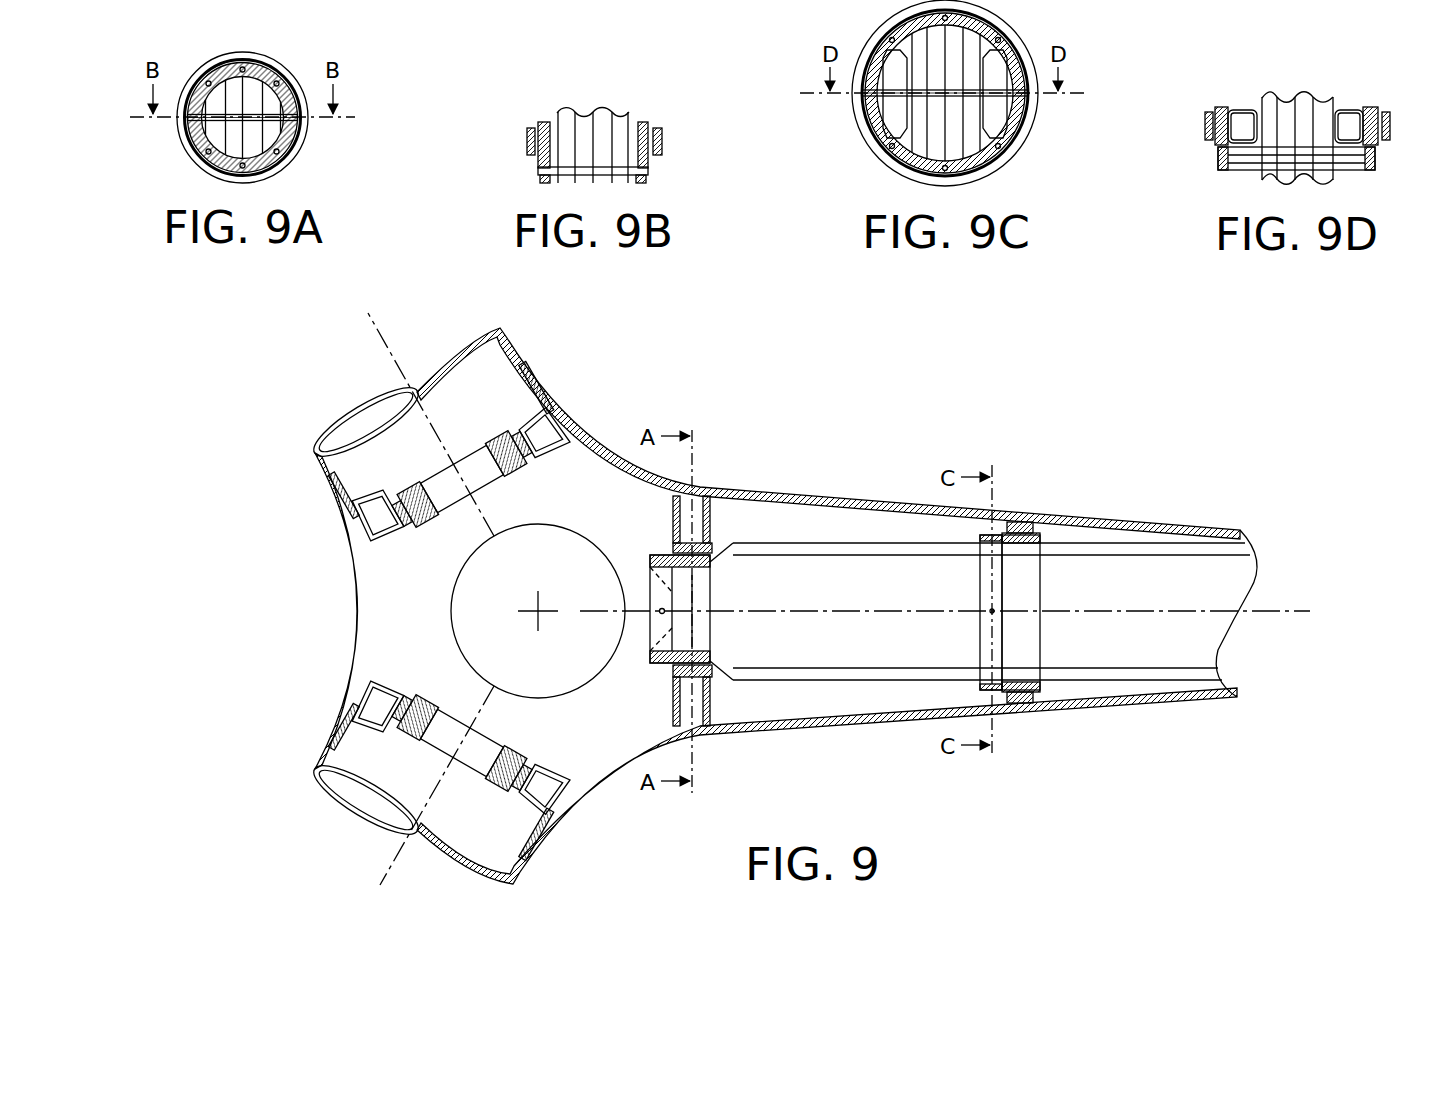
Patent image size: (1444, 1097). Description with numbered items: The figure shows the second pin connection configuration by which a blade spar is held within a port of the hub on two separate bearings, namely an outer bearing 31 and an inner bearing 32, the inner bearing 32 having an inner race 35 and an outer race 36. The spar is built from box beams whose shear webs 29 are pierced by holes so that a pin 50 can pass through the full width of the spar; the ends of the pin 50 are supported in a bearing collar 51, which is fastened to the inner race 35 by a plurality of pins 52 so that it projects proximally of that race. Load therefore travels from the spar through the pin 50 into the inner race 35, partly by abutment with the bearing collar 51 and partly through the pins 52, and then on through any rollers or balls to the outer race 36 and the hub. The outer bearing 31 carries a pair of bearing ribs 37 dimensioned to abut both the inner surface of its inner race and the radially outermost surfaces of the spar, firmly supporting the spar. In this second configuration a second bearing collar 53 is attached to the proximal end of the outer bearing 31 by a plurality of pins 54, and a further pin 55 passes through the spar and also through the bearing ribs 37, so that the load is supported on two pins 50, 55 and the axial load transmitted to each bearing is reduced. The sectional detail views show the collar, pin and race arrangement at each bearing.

In FIG. 9B, the shear webs 29 is at (557, 113).
In FIG. 9, the outer bearing 31 is at (1058, 504).
In FIG. 9, the inner bearing 32 is at (712, 466).
In FIG. 9B, the inner race 35 is at (648, 122).
In FIG. 9, the inner race 35 is at (656, 672).
In FIG. 9B, the outer race 36 is at (663, 142).
In FIG. 9C, the bearing ribs 37 is at (986, 94).
In FIG. 9B, the pin 50 is at (538, 178).
In FIG. 9B, the bearing collar 51 is at (648, 178).
In FIG. 9, the bearing collar 51 is at (656, 552).
In FIG. 9, the pins 52 is at (697, 652).
In FIG. 9, the second bearing collar 53 is at (986, 548).
In FIG. 9, the pins 54 is at (1005, 548).
In FIG. 9D, the pin 55 is at (1375, 157).